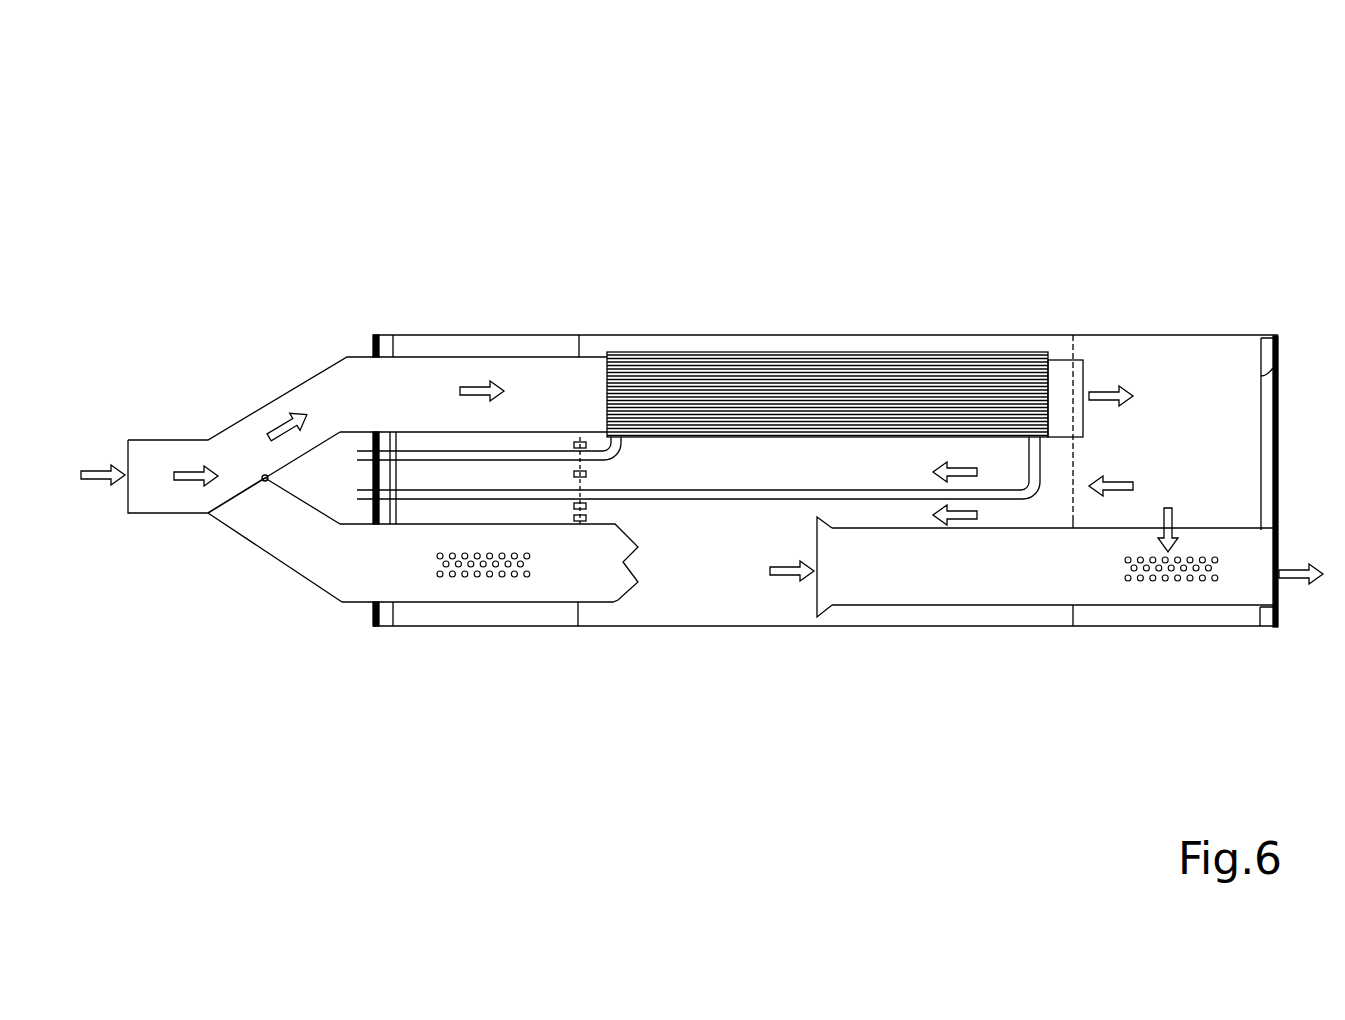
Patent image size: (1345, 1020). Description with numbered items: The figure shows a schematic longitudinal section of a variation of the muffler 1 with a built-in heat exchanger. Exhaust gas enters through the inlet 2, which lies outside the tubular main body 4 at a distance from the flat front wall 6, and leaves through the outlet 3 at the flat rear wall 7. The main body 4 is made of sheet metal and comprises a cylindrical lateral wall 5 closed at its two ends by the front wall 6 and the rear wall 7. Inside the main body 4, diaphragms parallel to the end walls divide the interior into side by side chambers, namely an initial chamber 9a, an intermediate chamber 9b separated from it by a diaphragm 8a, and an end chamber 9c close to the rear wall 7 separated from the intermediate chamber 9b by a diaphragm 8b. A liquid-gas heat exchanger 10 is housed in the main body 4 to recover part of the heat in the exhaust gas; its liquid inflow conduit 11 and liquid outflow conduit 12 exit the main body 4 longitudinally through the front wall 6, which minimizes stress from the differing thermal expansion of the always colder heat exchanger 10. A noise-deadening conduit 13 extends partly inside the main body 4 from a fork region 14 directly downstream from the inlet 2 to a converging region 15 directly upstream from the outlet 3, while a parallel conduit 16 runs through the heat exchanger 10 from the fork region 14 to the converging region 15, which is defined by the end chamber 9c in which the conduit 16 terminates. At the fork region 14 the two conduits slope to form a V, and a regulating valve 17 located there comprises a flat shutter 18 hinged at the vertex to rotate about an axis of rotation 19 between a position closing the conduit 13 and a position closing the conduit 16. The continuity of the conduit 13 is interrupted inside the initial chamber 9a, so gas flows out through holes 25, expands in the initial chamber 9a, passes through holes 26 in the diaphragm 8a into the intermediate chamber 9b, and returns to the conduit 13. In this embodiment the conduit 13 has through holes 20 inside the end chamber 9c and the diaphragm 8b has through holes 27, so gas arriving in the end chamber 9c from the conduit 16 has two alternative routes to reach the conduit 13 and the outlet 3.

The muffler 1 is at (200, 137).
The inlet 2 is at (120, 506).
The outlet 3 is at (1281, 593).
The tubular main body 4 is at (896, 753).
The cylindrical lateral wall 5 is at (723, 633).
The flat front wall 6 is at (370, 612).
The flat rear wall 7 is at (1284, 348).
The diaphragm 8a is at (592, 465).
The diaphragm 8b is at (1075, 527).
The initial chamber 9a is at (488, 619).
The intermediate chamber 9b is at (763, 609).
The end chamber 9c is at (1178, 362).
The liquid-gas heat exchanger 10 is at (794, 372).
The liquid inflow conduit 11 is at (358, 491).
The liquid outflow conduit 12 is at (358, 455).
The noise-deadening conduit 13 is at (307, 553).
The fork region 14 is at (249, 370).
The converging region 15 is at (1148, 278).
The conduit 16 is at (322, 388).
The regulating valve 17 is at (216, 550).
The flat shutter 18 is at (237, 498).
The axis of rotation 19 is at (266, 484).
The through holes 20 is at (1167, 574).
The through holes 25 is at (456, 574).
The through holes 26 is at (566, 507).
The through holes 27 is at (1082, 454).